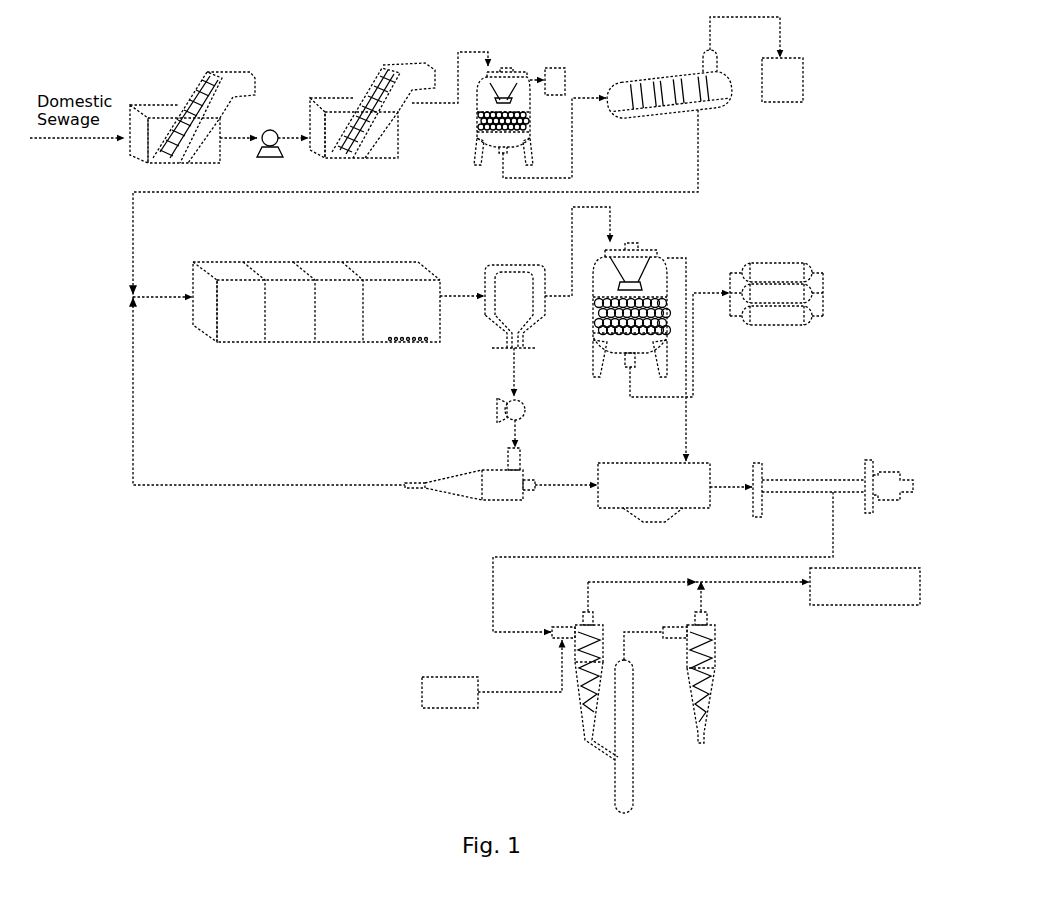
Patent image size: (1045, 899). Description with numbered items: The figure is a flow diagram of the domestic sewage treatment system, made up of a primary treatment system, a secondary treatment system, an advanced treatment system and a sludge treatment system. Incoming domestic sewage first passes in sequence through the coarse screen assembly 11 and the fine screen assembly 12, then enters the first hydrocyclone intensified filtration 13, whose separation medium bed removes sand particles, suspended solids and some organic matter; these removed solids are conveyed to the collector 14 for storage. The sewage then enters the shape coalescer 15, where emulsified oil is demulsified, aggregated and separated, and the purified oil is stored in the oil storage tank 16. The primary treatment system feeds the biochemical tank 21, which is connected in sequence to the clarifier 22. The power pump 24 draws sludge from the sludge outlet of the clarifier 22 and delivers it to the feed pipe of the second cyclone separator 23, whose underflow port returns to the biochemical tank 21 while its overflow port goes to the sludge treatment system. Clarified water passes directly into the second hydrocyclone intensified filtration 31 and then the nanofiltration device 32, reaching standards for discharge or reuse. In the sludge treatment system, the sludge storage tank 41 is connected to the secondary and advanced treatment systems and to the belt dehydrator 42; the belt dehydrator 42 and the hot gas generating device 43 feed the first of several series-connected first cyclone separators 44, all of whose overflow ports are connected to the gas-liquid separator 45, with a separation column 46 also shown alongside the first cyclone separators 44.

The coarse screen assembly 11 is at (173, 113).
The fine screen assembly 12 is at (350, 100).
The first hydrocyclone intensified filtration 13 is at (510, 66).
The collector 14 is at (557, 70).
The shape coalescer 15 is at (688, 82).
The oil storage tank 16 is at (780, 77).
The biochemical tank 21 is at (280, 275).
The clarifier 22 is at (520, 288).
The second cyclone separator 23 is at (492, 487).
The power pump 24 is at (507, 400).
The second hydrocyclone intensified filtration 31 is at (653, 280).
The nanofiltration device 32 is at (773, 272).
The sludge storage tank 41 is at (663, 485).
The belt dehydrator 42 is at (807, 485).
The hot gas generating device 43 is at (453, 690).
The first cyclone separator 44 is at (585, 710).
The gas-liquid separator 45 is at (872, 580).
The separation column 46 is at (625, 747).